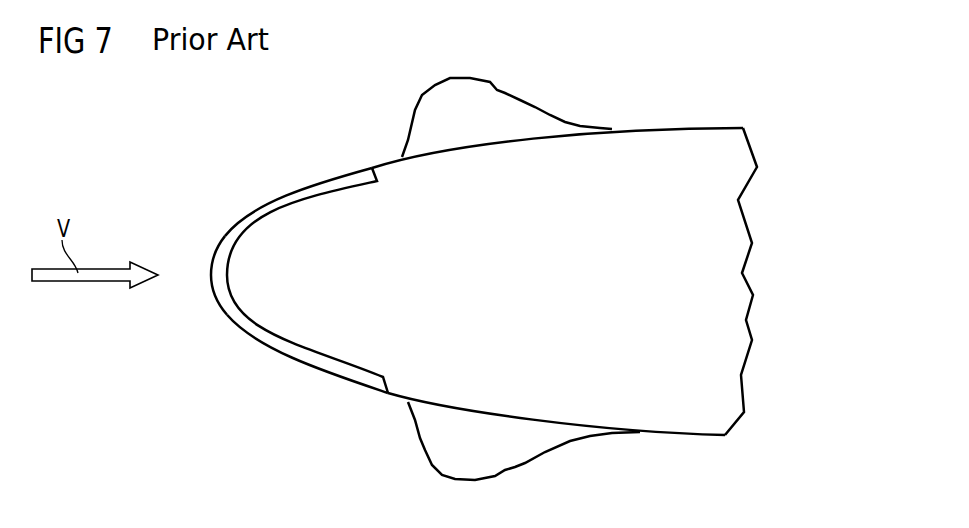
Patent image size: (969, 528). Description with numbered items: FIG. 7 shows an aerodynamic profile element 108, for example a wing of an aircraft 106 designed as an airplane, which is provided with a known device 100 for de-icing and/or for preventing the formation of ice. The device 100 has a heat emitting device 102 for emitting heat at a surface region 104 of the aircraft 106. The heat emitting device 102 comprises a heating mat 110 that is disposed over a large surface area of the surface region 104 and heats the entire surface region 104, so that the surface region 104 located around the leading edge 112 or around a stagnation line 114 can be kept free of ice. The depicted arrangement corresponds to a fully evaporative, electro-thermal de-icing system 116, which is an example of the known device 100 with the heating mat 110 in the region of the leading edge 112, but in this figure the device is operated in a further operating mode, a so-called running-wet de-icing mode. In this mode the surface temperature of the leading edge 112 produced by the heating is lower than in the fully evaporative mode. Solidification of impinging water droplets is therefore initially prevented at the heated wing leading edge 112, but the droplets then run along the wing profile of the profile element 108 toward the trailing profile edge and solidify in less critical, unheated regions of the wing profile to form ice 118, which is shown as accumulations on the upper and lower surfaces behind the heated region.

The device for de-icing and/or for preventing the formation of ice 100 is at (256, 430).
The heat emitting device 102 is at (268, 213).
The surface region 104 is at (316, 181).
The aircraft 106 is at (722, 292).
The aerodynamic profile element 108 is at (678, 434).
The heating mat 110 is at (348, 370).
The leading edge 112 is at (211, 289).
The stagnation line 114 is at (209, 262).
The fully evaporative, electro-thermal de-icing system 116 is at (243, 337).
The ice 118 is at (515, 108).